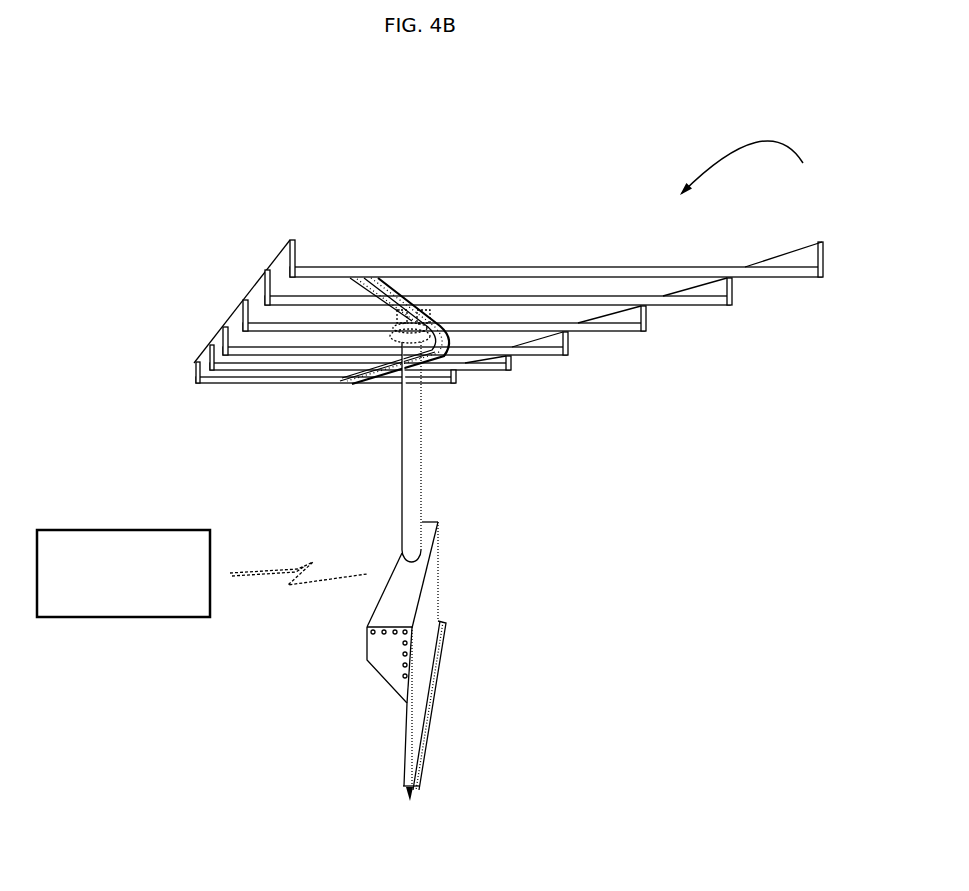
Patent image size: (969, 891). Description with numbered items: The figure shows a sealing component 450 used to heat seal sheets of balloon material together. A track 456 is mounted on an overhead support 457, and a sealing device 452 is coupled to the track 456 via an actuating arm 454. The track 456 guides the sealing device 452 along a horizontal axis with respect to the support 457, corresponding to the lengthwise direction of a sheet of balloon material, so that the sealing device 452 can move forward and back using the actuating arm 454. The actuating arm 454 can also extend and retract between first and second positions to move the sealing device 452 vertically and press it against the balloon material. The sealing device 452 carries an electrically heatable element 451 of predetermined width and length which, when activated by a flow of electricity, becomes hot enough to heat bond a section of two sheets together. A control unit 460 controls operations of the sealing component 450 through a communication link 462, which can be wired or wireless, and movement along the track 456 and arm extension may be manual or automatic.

The sealing component 450 is at (750, 168).
The electrically heatable element 451 is at (426, 790).
The sealing device 452 is at (431, 610).
The actuating arm 454 is at (431, 438).
The track 456 is at (431, 305).
The overhead support 457 is at (278, 258).
The control unit 460 is at (123, 530).
The communication link 462 is at (272, 565).